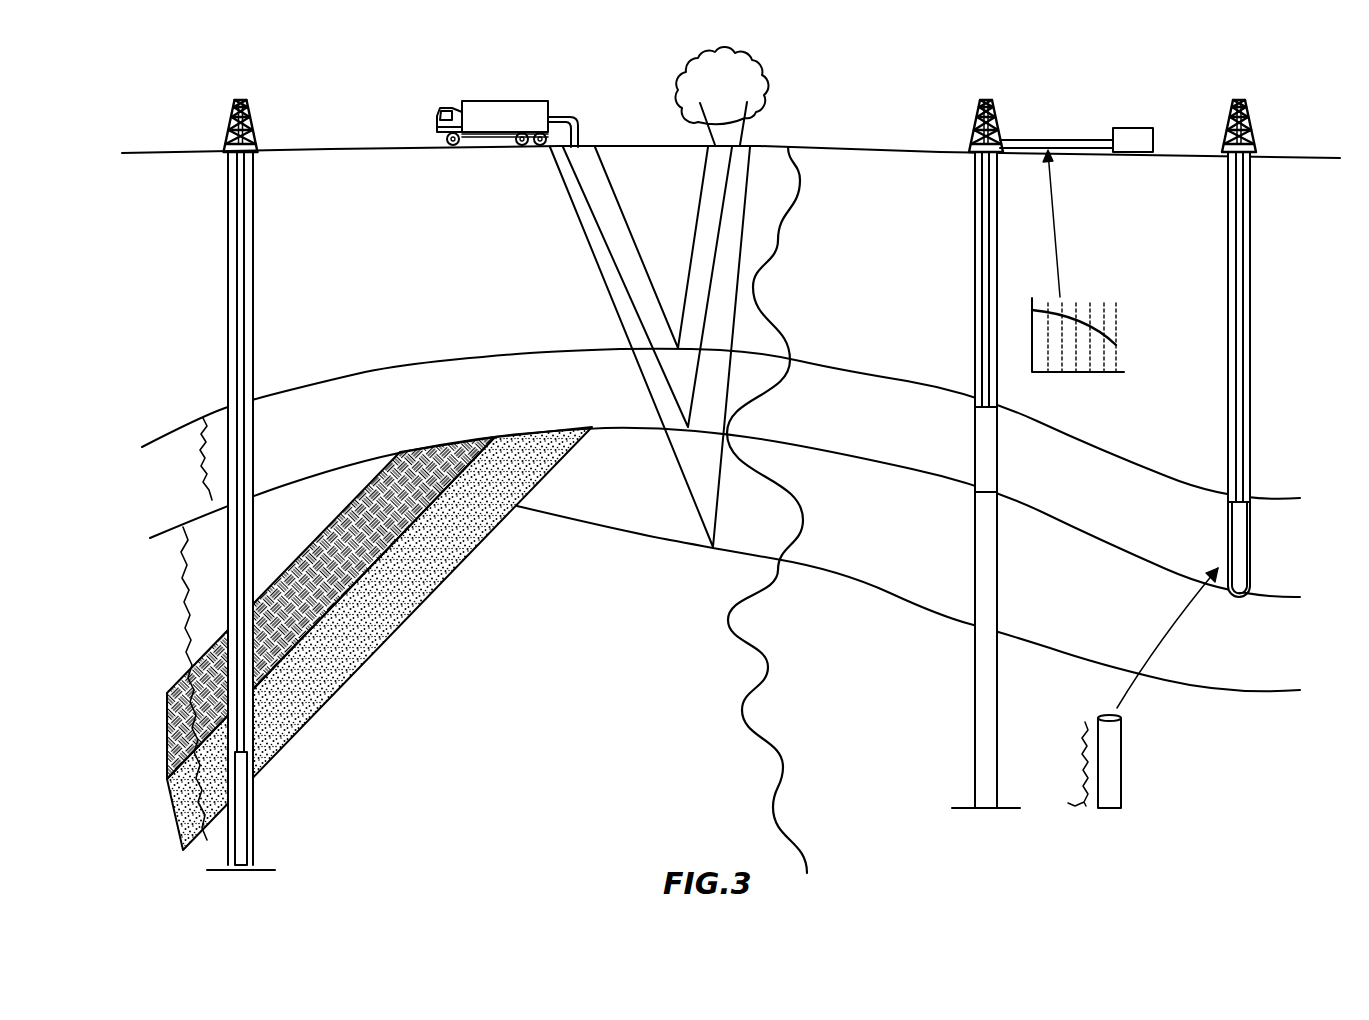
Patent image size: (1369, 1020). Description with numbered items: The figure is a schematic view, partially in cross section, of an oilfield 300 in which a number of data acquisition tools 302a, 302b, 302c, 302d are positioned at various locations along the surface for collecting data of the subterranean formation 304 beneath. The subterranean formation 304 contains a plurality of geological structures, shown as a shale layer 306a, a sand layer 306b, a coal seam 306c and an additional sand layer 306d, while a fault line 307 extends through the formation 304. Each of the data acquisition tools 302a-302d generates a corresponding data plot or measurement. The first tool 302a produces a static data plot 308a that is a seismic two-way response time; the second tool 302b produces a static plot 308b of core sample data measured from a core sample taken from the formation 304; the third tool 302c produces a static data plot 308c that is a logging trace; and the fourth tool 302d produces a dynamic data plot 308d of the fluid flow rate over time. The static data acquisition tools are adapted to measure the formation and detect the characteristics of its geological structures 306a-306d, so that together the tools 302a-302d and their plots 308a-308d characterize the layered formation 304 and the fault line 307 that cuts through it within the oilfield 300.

The oilfield 300 is at (1177, 100).
The data acquisition tool 302a is at (470, 100).
The data acquisition tool 302b is at (1242, 533).
The data acquisition tool 302c is at (253, 810).
The data acquisition tool 302d is at (987, 490).
The subterranean formation 304 is at (581, 639).
The shale layer 306a is at (387, 421).
The sand layer 306b is at (313, 531).
The coal seam 306c is at (377, 551).
The additional sand layer 306d is at (415, 605).
The fault line 307 is at (637, 427).
The static data plot 308a is at (766, 668).
The static plot 308b is at (1085, 735).
The static data plot 308c is at (190, 622).
The dynamic data plot 308d is at (1082, 373).